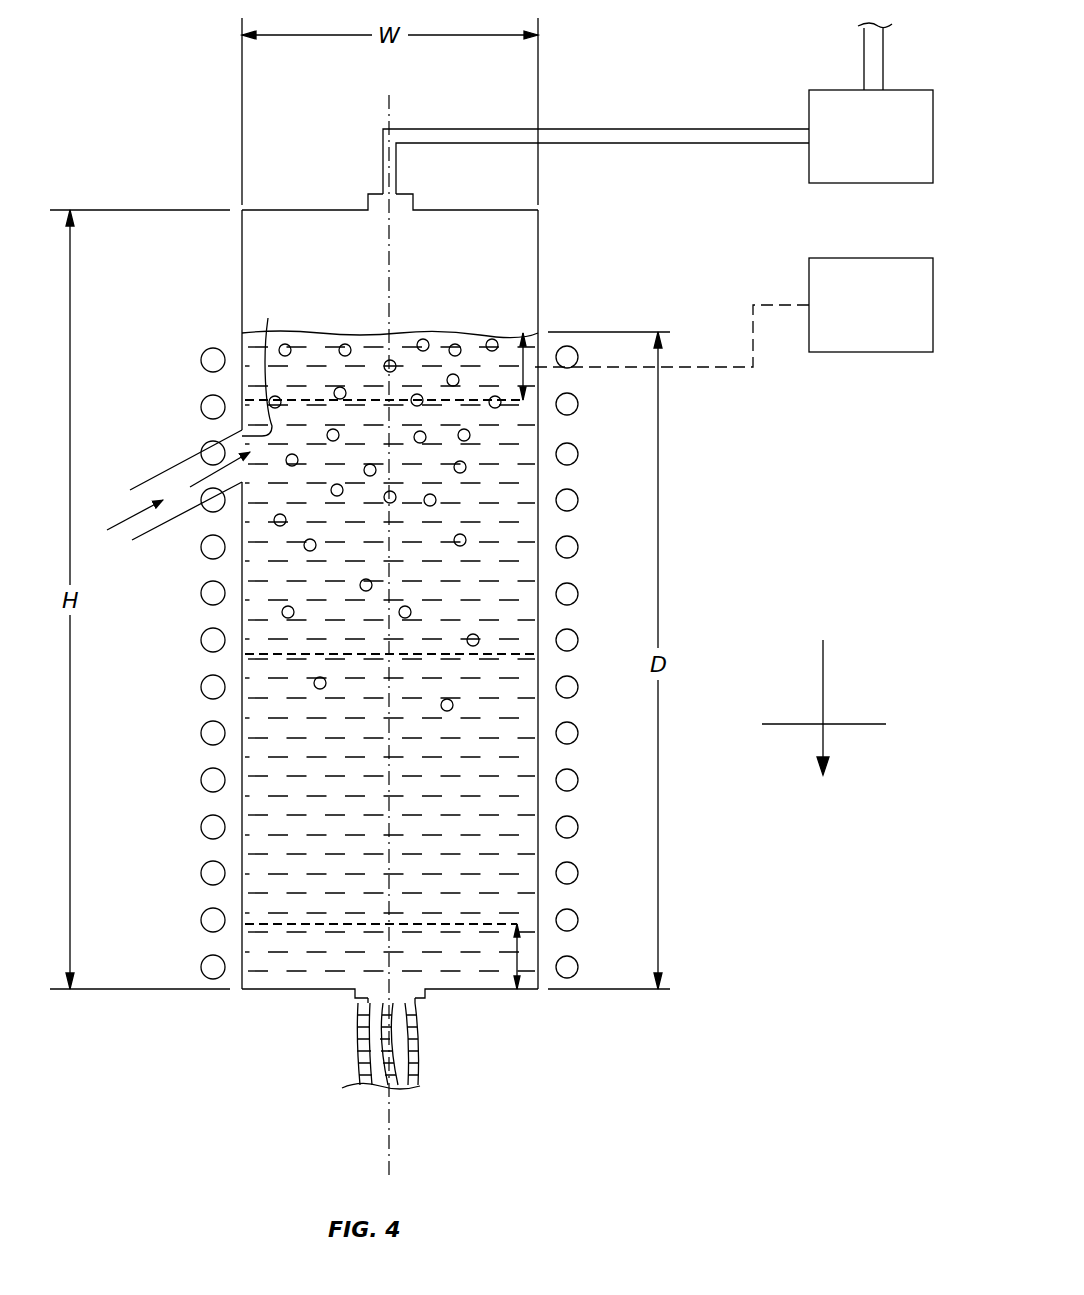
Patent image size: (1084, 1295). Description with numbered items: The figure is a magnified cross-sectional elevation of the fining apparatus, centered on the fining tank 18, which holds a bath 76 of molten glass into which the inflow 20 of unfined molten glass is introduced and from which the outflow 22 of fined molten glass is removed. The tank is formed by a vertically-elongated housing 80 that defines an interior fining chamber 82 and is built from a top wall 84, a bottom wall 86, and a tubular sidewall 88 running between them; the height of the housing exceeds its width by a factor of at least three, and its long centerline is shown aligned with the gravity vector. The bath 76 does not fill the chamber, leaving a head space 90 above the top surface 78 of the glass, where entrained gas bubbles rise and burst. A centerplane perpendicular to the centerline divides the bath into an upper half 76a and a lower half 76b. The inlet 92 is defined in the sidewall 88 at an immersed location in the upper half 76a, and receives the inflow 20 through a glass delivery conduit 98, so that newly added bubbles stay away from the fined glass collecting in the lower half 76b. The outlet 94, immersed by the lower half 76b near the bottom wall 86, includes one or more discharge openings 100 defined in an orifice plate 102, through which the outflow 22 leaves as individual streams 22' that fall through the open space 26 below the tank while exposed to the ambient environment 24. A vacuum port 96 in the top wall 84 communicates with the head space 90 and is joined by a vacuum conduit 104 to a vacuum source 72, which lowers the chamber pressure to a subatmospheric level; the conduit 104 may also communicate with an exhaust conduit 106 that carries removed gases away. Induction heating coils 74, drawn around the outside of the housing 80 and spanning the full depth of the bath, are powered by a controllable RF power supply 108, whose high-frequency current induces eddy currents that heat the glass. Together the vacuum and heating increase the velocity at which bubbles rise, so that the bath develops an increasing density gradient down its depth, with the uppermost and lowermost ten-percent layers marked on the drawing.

The fining tank 18 is at (214, 303).
The inflow of unfined molten glass 20 is at (118, 526).
The outflow of fined molten glass 22 is at (424, 1046).
The streams of fined molten glass 22' is at (440, 1073).
The ambient environment 24 is at (278, 1054).
The open space 26 is at (500, 1057).
The vacuum source 72 is at (871, 136).
The induction heating coils 74 is at (578, 354).
The molten glass bath 76 is at (390, 651).
The upper half of the molten glass bath 76a is at (513, 573).
The lower half of the molten glass bath 76b is at (528, 850).
The top surface of the glass bath 78 is at (476, 333).
The housing 80 is at (542, 479).
The interior fining chamber 82 is at (528, 793).
The top wall 84 is at (284, 209).
The bottom wall 86 is at (266, 990).
The tubular sidewall 88 is at (242, 712).
The head space 90 is at (477, 264).
The inlet 92 is at (263, 364).
The outlet 94 is at (366, 993).
The vacuum port 96 is at (404, 209).
The glass delivery conduit 98 is at (158, 528).
The discharge openings 100 is at (370, 1002).
The orifice plate 102 is at (398, 1000).
The vacuum conduit 104 is at (430, 128).
The exhaust conduit 106 is at (884, 50).
The controllable RF power supply 108 is at (731, 312).